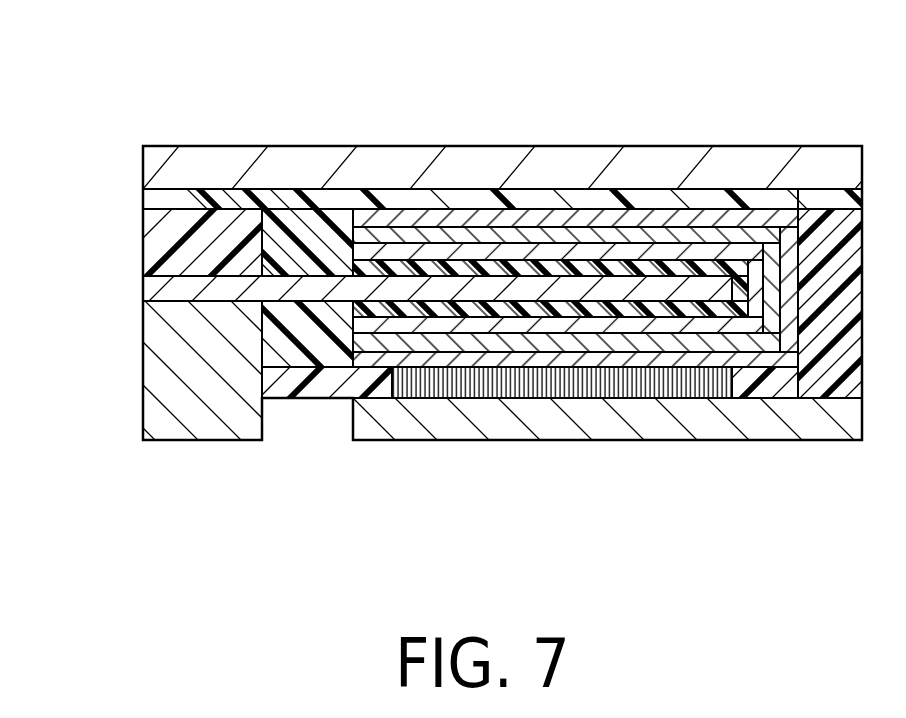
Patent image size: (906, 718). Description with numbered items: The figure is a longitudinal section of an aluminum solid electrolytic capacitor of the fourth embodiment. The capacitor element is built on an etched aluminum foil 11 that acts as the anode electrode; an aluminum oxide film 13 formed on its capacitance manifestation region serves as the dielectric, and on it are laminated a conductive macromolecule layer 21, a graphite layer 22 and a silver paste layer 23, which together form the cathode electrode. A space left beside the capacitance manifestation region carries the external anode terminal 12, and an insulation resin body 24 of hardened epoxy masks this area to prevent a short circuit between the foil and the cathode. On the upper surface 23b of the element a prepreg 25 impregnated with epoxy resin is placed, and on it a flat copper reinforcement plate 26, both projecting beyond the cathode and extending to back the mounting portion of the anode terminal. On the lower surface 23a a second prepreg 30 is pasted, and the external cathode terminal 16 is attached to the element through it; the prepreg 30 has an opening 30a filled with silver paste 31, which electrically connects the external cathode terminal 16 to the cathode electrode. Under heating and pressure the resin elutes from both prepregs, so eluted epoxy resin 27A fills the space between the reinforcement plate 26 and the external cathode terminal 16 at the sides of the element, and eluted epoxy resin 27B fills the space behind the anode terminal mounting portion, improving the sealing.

The aluminum foil 11 is at (157, 288).
The external anode terminal 12 is at (201, 415).
The aluminum oxide film 13 is at (724, 258).
The external cathode terminal 16 is at (457, 420).
The conductive macromolecule layer 21 is at (640, 250).
The graphite layer 22 is at (563, 222).
The silver paste layer 23 is at (575, 296).
The lower surface 23a is at (615, 398).
The upper surface 23b is at (472, 208).
The insulation resin body 24 is at (310, 230).
The prepreg 25 is at (205, 190).
The reinforcement plate 26 is at (797, 190).
The eluted epoxy resin 27A is at (827, 398).
The eluted epoxy resin 27B is at (163, 241).
The prepreg 30 is at (453, 359).
The opening 30a is at (750, 398).
The silver paste 31 is at (541, 400).